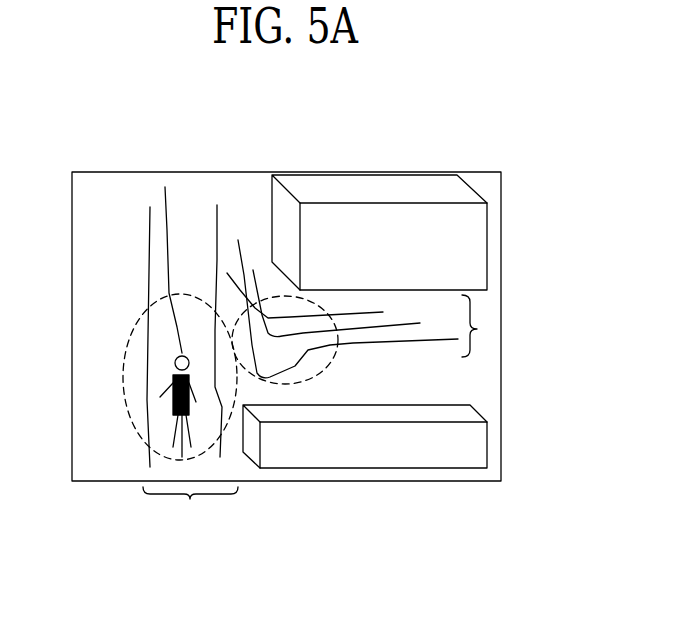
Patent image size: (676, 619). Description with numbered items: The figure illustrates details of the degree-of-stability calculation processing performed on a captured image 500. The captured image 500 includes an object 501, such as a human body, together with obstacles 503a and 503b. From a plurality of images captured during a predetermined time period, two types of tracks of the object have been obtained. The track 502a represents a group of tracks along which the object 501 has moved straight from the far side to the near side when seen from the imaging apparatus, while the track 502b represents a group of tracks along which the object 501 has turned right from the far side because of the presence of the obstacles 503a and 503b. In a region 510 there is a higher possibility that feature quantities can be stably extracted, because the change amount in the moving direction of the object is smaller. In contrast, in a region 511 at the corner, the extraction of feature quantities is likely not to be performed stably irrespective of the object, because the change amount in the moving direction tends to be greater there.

The captured image 500 is at (190, 172).
The object 501 is at (150, 420).
The track 502a is at (190, 499).
The track 502b is at (477, 329).
The obstacle 503a is at (417, 172).
The obstacle 503b is at (410, 460).
The region 510 is at (128, 420).
The region 511 is at (337, 350).